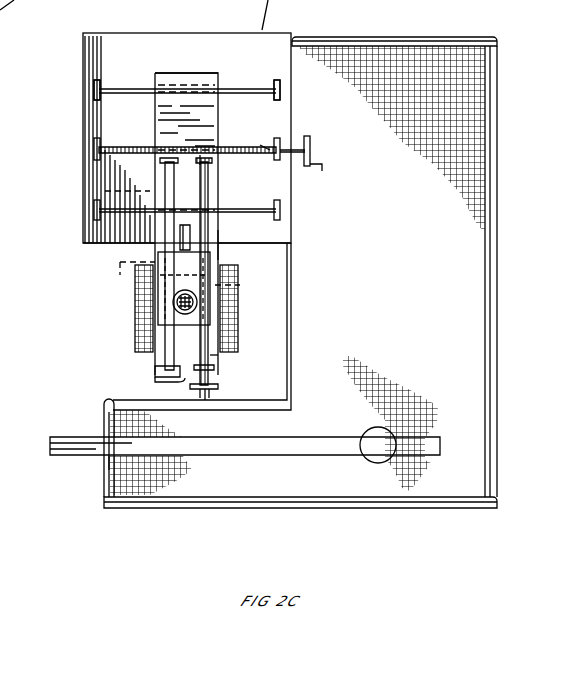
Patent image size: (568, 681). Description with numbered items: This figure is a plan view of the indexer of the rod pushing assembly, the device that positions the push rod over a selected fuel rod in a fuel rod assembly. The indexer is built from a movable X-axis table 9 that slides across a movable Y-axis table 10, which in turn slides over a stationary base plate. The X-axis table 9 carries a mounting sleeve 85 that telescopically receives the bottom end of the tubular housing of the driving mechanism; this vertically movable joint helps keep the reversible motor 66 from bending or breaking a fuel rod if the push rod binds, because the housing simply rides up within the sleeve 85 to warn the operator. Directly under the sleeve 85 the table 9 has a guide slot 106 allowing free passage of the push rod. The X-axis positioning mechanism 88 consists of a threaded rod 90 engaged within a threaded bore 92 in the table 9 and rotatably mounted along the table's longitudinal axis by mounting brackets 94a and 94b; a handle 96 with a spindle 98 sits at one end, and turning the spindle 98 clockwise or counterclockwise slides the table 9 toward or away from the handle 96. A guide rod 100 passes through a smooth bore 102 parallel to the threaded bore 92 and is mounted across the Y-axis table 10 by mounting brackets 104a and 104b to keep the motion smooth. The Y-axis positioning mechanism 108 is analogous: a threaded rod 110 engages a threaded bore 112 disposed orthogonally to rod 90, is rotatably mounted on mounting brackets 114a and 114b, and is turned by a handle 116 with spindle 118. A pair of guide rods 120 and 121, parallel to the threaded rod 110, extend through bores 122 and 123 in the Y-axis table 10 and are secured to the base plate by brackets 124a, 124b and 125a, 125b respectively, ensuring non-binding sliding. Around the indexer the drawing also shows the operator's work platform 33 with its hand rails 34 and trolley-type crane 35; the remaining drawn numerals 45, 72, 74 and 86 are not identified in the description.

The X-axis table 9 is at (184, 288).
The Y-axis table 10 is at (186, 224).
The work platform 33 is at (440, 185).
The hand rails 34 is at (113, 462).
The trolley-type crane 35 is at (302, 445).
The grid element 45 is at (135, 305).
The reversible motor 66 is at (0, 480).
The support arm 72 is at (9, 560).
The bracket 74 is at (0, 435).
The mounting sleeve 85 is at (176, 306).
The grid element 86 is at (200, 305).
The X-axis positioning mechanism 88 is at (212, 362).
The threaded rod 90 is at (228, 240).
The threaded bore 92 is at (240, 284).
The mounting bracket 94a is at (214, 370).
The mounting bracket 94b is at (212, 160).
The handle 96 is at (200, 390).
The spindle 98 is at (212, 395).
The guide rod 100 is at (110, 240).
The smooth bore 102 is at (150, 262).
The mounting bracket 104a is at (152, 370).
The mounting bracket 104b is at (165, 163).
The guide slot 106 is at (183, 384).
The Y-axis positioning mechanism 108 is at (265, 150).
The threaded rod 110 is at (142, 150).
The threaded bore 112 is at (200, 155).
The mounting bracket 114a is at (282, 160).
The mounting bracket 114b is at (94, 150).
The handle 116 is at (312, 150).
The spindle 118 is at (322, 168).
The guide rod 120 is at (146, 92).
The guide rod 121 is at (287, 240).
The bore 122 is at (198, 80).
The bore 123 is at (93, 192).
The bracket 124a is at (280, 92).
The bracket 124b is at (94, 88).
The bracket 125a is at (283, 212).
The bracket 125b is at (94, 215).